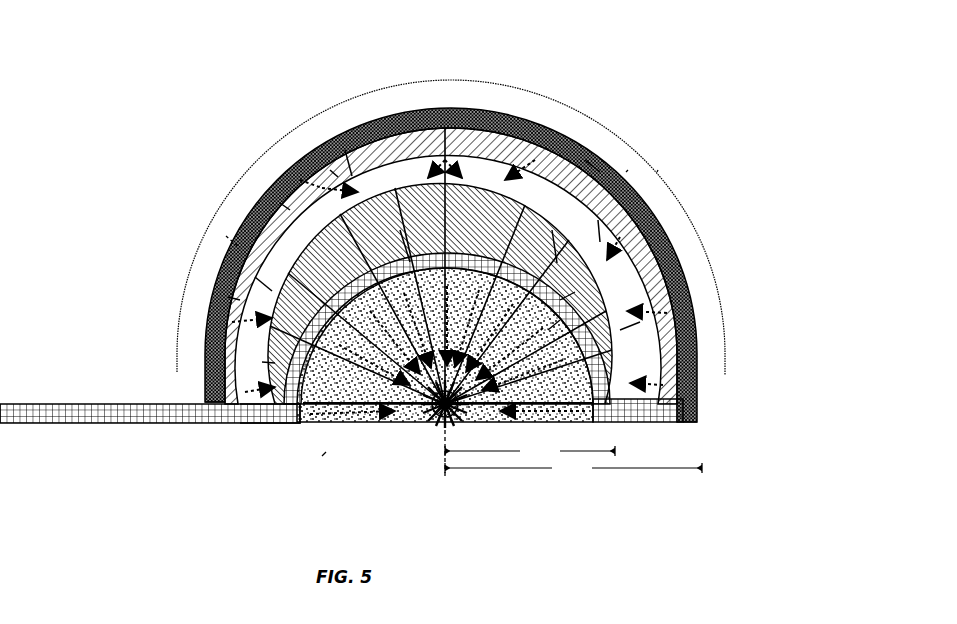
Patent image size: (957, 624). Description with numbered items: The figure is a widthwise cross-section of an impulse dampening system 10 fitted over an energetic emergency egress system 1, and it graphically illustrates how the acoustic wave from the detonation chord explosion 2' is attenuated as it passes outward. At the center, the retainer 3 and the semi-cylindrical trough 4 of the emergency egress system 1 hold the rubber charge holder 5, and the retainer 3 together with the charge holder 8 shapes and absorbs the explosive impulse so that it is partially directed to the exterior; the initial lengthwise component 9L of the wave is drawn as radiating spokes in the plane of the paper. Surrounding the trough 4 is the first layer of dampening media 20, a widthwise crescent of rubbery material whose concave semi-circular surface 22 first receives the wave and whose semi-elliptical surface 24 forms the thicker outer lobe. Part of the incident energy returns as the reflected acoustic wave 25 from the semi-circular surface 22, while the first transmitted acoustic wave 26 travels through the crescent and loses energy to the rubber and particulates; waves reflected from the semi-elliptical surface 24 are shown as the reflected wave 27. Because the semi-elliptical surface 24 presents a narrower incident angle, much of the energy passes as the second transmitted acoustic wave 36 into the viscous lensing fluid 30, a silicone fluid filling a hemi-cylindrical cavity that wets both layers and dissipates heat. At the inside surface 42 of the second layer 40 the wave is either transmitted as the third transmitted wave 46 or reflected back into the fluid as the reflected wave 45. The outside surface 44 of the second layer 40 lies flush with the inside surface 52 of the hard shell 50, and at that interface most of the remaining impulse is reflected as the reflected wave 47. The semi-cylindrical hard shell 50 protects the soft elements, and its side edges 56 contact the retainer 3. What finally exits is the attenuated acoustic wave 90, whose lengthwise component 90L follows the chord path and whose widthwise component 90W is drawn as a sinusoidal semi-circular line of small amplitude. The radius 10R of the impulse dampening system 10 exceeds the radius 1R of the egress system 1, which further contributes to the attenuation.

The emergency egress system 1 is at (324, 454).
The detonation chord explosion 2' is at (408, 469).
The retainer 3 is at (130, 427).
The semi-cylindrical trough 4 is at (290, 405).
The rubber charge holder 5 is at (320, 380).
The charge holder 8 is at (410, 422).
The lengthwise component of acoustic wave 9L is at (410, 262).
The impulse dampening system 10 is at (623, 155).
The radius of impulse dampening system 10R is at (573, 471).
The radius of emergency egress system 1R is at (530, 453).
The first layer of dampening media 20 is at (440, 293).
The semi-circular surface 22 is at (275, 363).
The semi-elliptical surface 24 is at (322, 188).
The reflected acoustic wave 25 is at (338, 177).
The first transmitted acoustic wave 26 is at (600, 242).
The reflected wave from semi-elliptical surface 27 is at (617, 362).
The viscous lensing fluid 30 is at (440, 285).
The second transmitted acoustic wave 36 is at (628, 170).
The second layer 40 is at (451, 266).
The inside surface of second layer 42 is at (240, 300).
The outside surface of second layer 44 is at (290, 210).
The reflected wave 45 is at (270, 290).
The third transmitted wave 46 is at (557, 263).
The reflected wave 47 is at (352, 176).
The hard shell 50 is at (588, 159).
The inside surface of hard shell 52 is at (620, 330).
The side edges 56 is at (212, 405).
The attenuated acoustic wave 90 is at (746, 187).
The lengthwise component of attenuated acoustic wave 90L is at (226, 237).
The widthwise component of attenuated acoustic wave 90W is at (657, 172).